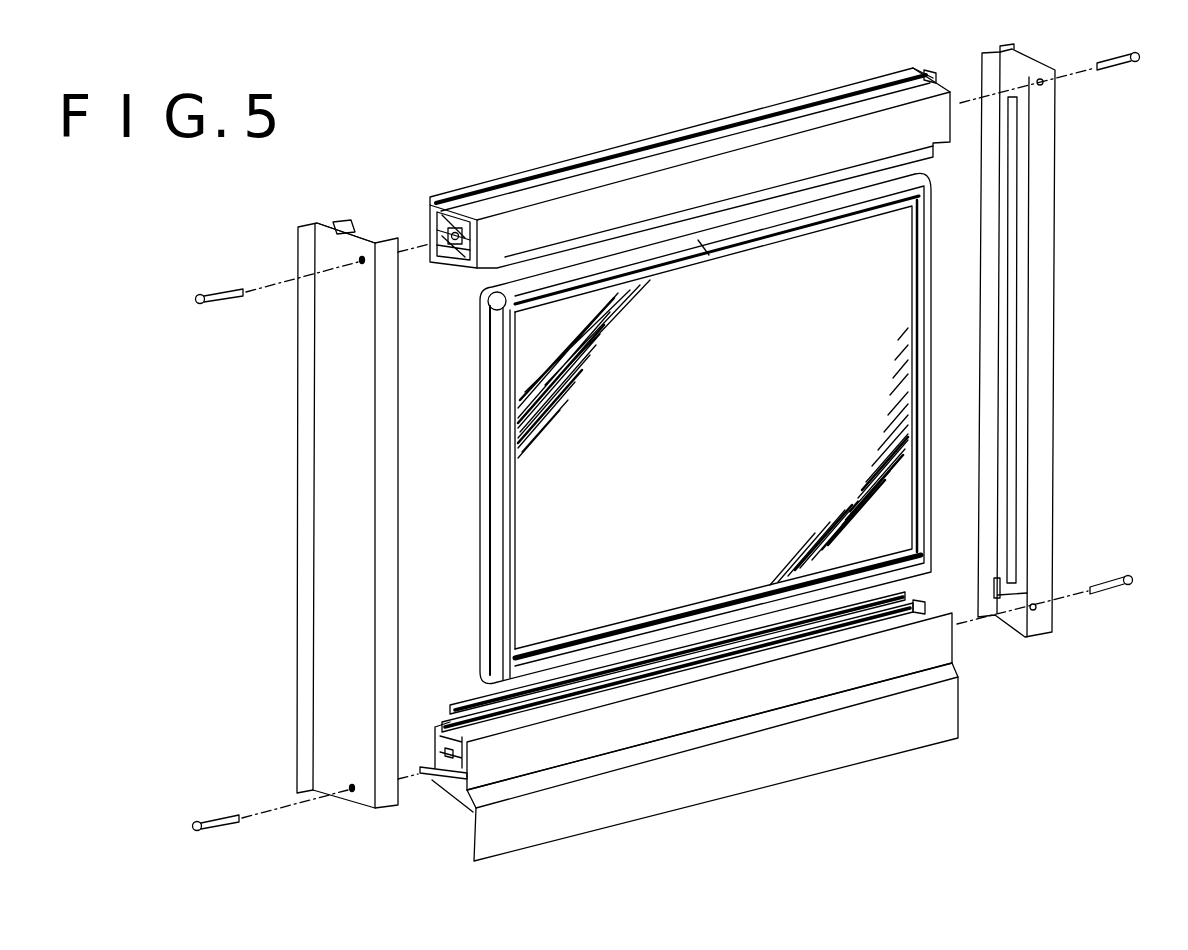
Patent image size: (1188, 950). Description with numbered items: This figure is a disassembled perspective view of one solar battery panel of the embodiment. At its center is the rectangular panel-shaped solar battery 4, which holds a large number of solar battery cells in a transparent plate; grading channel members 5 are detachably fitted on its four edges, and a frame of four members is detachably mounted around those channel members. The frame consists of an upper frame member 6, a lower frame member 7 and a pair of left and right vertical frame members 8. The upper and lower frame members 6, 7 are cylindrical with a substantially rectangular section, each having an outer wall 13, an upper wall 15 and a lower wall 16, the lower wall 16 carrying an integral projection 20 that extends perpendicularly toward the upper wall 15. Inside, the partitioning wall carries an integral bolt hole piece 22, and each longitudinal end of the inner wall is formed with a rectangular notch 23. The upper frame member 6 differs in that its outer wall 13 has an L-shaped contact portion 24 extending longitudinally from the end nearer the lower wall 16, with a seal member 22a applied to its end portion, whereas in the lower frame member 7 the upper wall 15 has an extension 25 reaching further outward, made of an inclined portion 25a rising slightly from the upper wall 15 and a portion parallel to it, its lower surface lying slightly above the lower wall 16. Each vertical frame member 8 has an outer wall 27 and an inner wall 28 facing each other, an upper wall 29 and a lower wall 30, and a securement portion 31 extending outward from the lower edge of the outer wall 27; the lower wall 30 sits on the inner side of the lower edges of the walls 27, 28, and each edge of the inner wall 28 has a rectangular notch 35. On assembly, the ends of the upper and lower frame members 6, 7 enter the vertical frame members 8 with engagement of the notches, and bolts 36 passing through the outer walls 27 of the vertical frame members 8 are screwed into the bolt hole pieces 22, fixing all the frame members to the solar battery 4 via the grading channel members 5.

The solar battery 4 is at (720, 428).
The grading channel member 5 is at (690, 255).
The upper frame member 6 is at (668, 436).
The lower frame member 7 is at (684, 452).
The vertical frame member 8 is at (674, 408).
The outer wall 13 is at (422, 780).
The upper wall 15 is at (662, 187).
The lower wall 16 is at (427, 218).
The projection 20 is at (470, 704).
The bolt hole piece 22 is at (460, 797).
The seal member 22a is at (477, 232).
The rectangular notch 23 is at (488, 733).
The contact portion 24 is at (600, 163).
The extension 25 is at (815, 762).
The inclined portion 25a is at (740, 727).
The outer wall 27 is at (360, 487).
The inner wall 28 is at (340, 219).
The upper wall 29 is at (398, 412).
The lower wall 30 is at (1017, 105).
The securement portion 31 is at (300, 493).
The rectangular notch 35 is at (1012, 58).
The bolt 36 is at (238, 297).